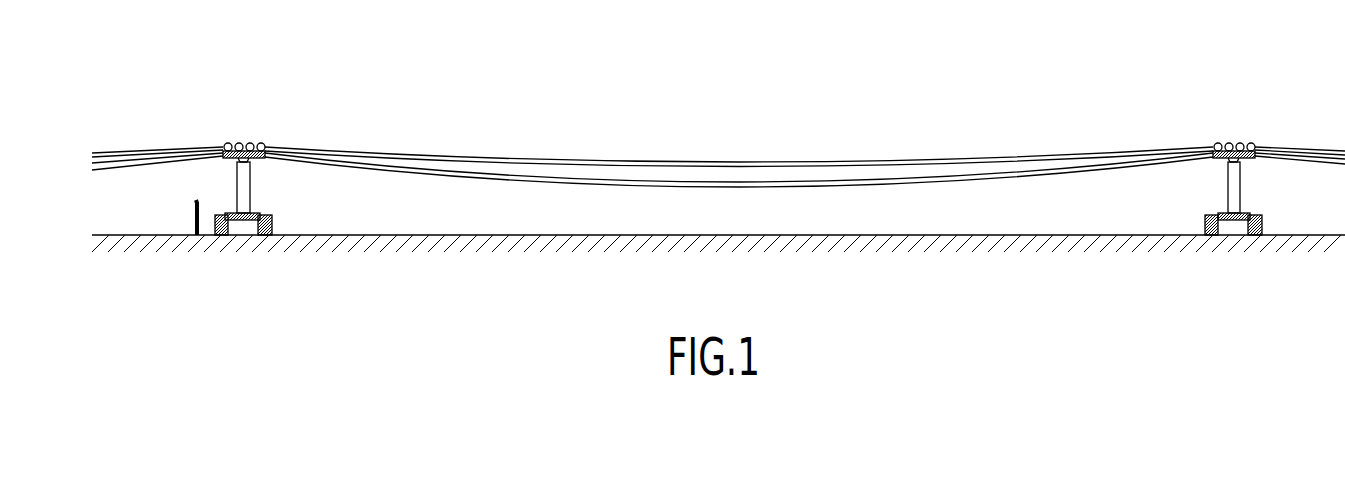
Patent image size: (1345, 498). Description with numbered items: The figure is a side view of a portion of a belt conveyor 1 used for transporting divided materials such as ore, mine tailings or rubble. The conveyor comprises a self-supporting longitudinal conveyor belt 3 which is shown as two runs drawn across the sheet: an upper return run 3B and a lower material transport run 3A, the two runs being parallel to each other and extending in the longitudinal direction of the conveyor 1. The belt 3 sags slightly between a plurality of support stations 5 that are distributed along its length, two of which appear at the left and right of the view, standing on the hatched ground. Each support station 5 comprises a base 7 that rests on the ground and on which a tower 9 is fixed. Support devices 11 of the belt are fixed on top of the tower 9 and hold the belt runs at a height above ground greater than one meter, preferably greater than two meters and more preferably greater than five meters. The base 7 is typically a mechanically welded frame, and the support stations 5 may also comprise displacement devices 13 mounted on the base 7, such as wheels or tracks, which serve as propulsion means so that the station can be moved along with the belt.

The belt conveyor 1 is at (718, 171).
The conveyor belt 3 is at (718, 193).
The material transport run 3A is at (559, 187).
The return run 3B is at (567, 160).
The support station 5 is at (223, 237).
The base 7 is at (243, 227).
The tower 9 is at (253, 185).
The support devices 11 is at (251, 139).
The displacement devices 13 is at (267, 238).